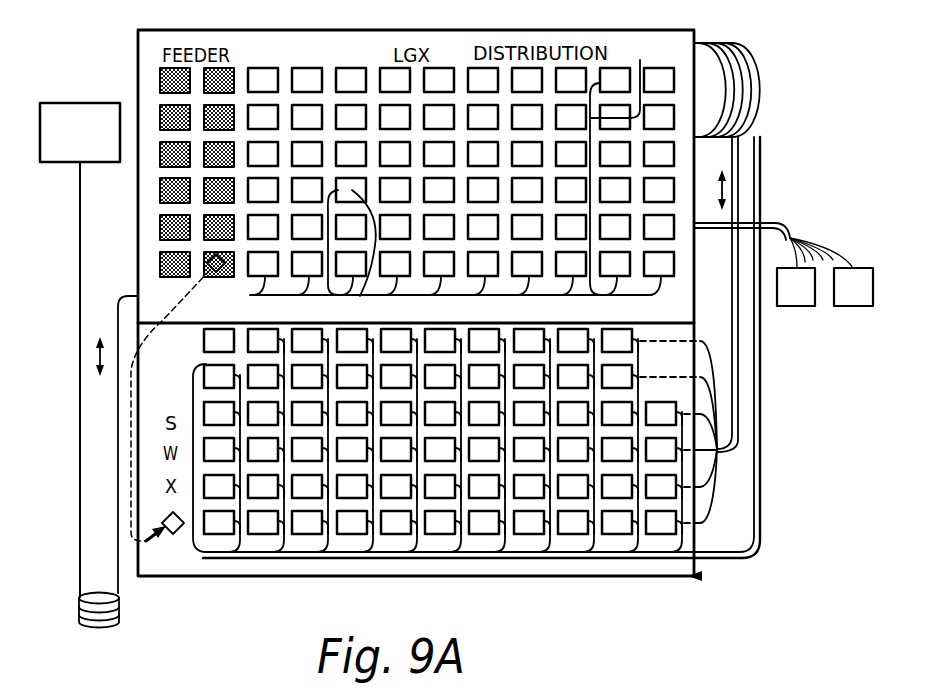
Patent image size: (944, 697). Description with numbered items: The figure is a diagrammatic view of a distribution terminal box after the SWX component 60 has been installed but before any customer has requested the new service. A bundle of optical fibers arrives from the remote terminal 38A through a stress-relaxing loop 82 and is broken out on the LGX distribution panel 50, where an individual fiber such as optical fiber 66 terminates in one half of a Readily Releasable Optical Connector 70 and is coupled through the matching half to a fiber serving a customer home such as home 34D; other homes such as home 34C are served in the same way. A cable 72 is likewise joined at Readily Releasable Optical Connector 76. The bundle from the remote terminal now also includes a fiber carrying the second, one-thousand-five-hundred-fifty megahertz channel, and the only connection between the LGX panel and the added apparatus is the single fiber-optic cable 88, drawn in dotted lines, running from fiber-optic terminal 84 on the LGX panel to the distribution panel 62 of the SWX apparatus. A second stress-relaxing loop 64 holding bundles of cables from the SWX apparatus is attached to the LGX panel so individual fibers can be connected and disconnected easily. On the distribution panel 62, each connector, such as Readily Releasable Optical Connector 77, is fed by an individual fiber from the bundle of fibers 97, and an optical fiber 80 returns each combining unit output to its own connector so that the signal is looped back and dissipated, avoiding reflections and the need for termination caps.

The remote terminal 38A is at (86, 103).
The fiber-optic terminal 84 is at (208, 258).
The Readily Releasable Optical Connector 70 is at (616, 78).
The optical fiber 66 is at (640, 60).
The LGX distribution panel 50 is at (697, 33).
The stress-relaxing loop 64 is at (745, 80).
The home 34C is at (800, 297).
The home 34D is at (858, 297).
The cable 72 is at (320, 284).
The Readily Releasable Optical Connector 76 is at (360, 297).
The Readily Releasable Optical Connector 77 is at (204, 342).
The fiber-optic cable 88 is at (130, 535).
The optical fiber 80 is at (193, 554).
The distribution panel 62 is at (231, 562).
The stress-relaxing loop 82 is at (120, 612).
The bundle of fibers 97 is at (518, 554).
The SWX component 60 is at (699, 579).